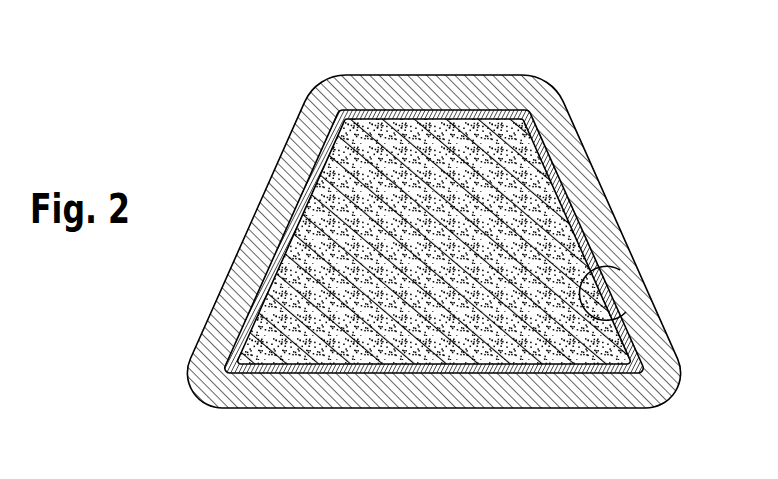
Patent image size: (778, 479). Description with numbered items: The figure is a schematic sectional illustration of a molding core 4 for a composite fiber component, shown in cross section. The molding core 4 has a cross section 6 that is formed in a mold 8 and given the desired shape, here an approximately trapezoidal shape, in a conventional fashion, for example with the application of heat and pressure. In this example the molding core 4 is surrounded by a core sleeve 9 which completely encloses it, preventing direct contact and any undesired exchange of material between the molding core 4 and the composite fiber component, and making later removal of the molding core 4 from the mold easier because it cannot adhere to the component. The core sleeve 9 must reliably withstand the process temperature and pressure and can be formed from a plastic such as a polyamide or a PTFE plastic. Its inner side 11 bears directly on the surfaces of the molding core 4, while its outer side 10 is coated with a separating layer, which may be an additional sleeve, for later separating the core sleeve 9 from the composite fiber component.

The molding core 4 is at (448, 148).
The cross section 6 is at (437, 323).
The mold 8 is at (618, 255).
The core sleeve 9 is at (570, 152).
The outer side 10 is at (583, 215).
The inner side 11 is at (630, 316).